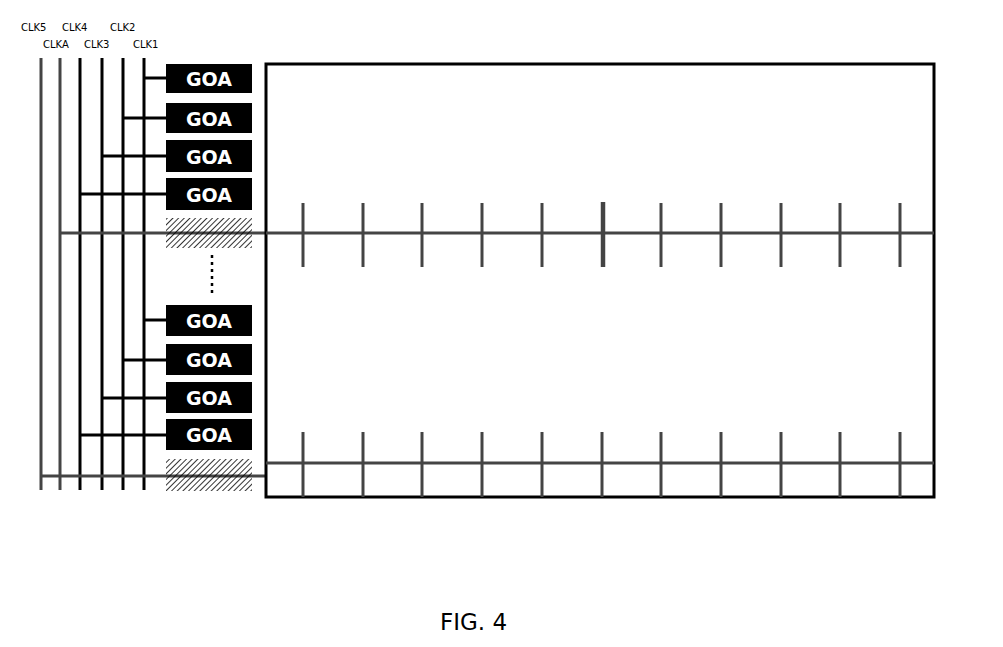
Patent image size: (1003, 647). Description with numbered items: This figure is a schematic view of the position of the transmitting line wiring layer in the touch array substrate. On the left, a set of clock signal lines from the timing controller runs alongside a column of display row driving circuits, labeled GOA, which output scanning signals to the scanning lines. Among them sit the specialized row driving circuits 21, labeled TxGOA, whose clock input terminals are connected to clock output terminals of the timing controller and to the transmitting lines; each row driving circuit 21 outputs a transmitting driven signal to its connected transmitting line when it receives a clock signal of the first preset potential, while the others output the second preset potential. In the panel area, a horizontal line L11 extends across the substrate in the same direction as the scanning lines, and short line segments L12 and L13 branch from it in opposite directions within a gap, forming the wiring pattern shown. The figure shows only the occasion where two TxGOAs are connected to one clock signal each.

The scan line L11 is at (805, 225).
The first line segment L12 is at (607, 207).
The second line segment L13 is at (607, 262).
The row driving circuit 21 is at (245, 252).